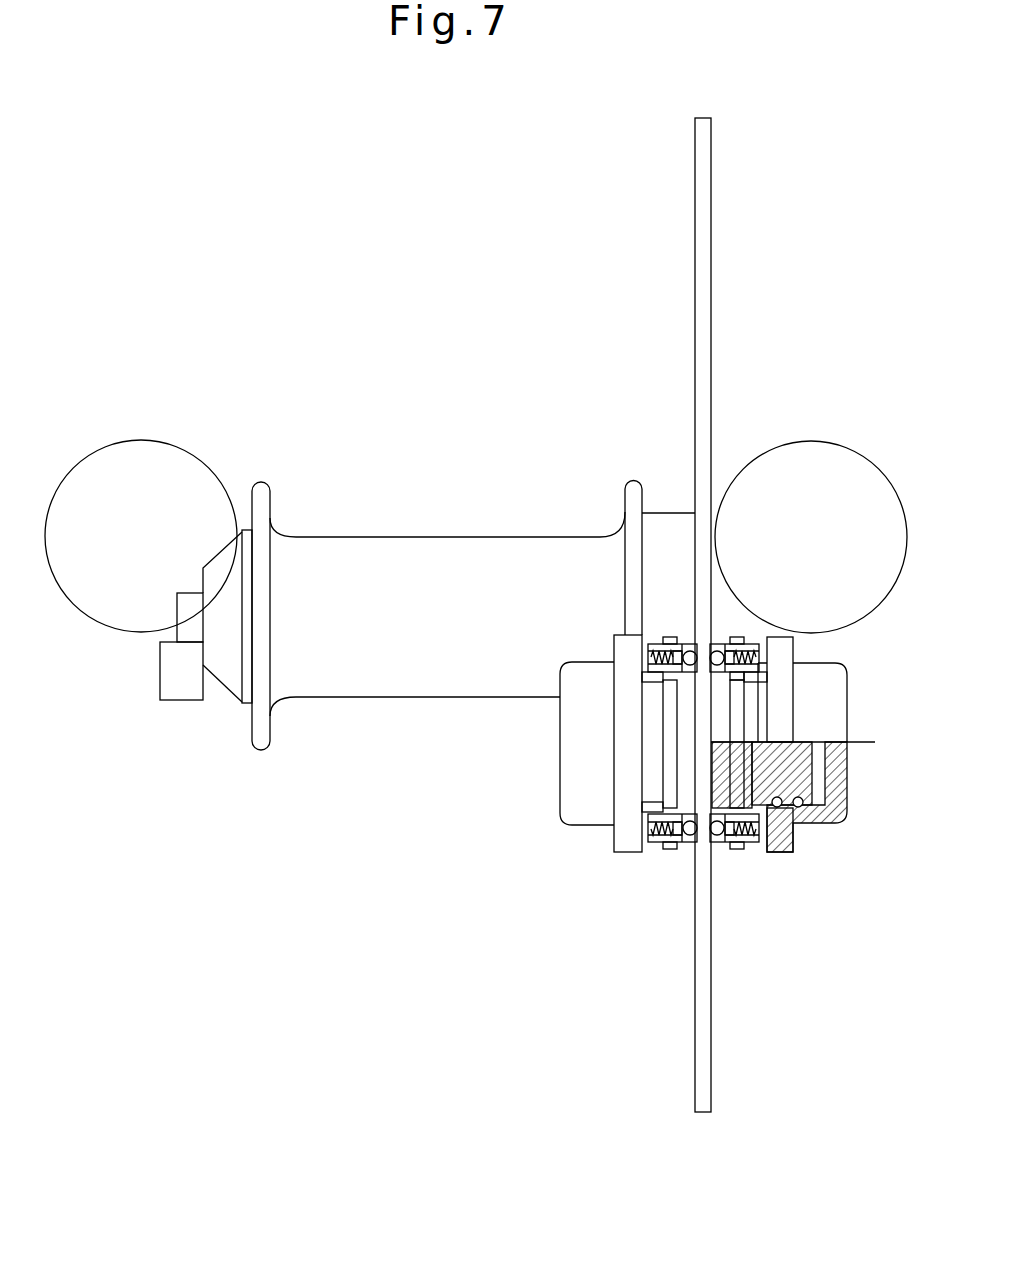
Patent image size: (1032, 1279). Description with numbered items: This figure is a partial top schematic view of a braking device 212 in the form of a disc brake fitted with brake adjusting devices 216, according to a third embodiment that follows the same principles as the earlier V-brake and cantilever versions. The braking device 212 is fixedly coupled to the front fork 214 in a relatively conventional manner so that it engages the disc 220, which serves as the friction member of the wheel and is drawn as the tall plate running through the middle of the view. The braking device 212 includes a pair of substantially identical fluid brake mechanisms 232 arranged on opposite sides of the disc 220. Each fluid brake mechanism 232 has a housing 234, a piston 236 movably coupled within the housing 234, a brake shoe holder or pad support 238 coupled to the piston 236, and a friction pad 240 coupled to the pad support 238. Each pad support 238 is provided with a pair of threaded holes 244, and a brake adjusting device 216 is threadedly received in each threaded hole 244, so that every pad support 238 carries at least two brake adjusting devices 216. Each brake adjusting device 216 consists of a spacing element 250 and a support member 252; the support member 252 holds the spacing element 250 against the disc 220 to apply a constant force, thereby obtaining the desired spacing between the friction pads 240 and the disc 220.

The braking device 212 is at (802, 193).
The front fork 214 is at (211, 459).
The brake adjusting device 216 is at (688, 650).
The disc 220 is at (713, 266).
The fluid brake mechanism 232 is at (548, 836).
The housing 234 is at (557, 728).
The piston 236 is at (640, 790).
The pad support 238 is at (659, 791).
The friction pad 240 is at (676, 757).
The threaded hole 244 is at (670, 690).
The spacing element 250 is at (657, 636).
The support member 252 is at (650, 652).